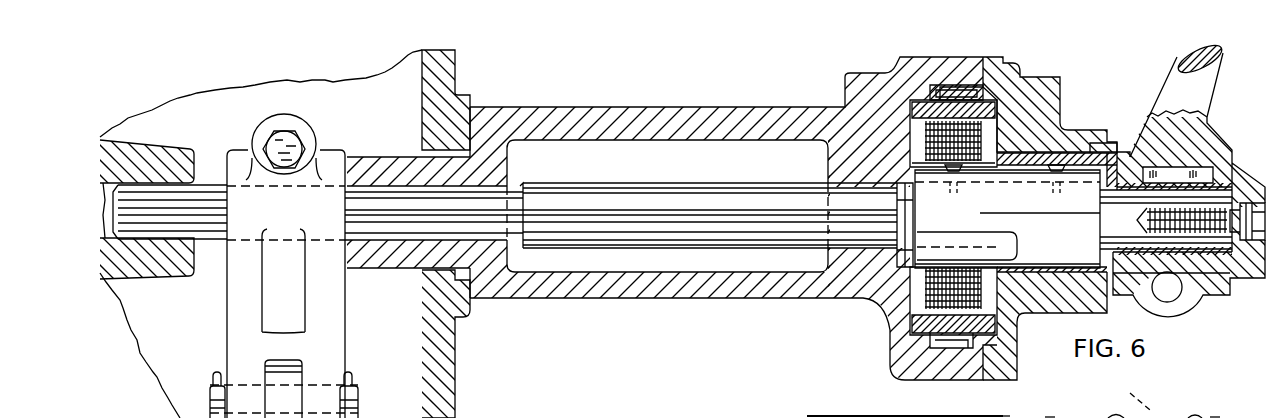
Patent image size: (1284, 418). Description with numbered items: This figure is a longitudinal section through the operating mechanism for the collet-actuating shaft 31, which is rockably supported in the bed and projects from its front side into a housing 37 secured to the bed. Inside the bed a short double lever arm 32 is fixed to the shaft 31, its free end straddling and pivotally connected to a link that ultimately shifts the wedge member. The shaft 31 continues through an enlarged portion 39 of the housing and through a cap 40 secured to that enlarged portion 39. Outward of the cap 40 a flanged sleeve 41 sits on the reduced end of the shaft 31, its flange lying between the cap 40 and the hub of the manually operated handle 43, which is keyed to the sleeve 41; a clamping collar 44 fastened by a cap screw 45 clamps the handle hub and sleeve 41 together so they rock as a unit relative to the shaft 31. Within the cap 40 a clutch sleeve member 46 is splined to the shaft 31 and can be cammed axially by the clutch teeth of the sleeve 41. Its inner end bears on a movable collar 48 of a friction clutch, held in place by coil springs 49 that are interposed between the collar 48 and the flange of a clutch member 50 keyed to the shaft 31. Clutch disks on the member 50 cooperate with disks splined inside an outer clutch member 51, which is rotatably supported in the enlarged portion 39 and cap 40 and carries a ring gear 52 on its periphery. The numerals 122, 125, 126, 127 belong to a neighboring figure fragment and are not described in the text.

The shaft 31 is at (637, 188).
The double lever arm 32 is at (330, 333).
The housing 37 is at (655, 117).
The enlarged portion of the housing 39 is at (915, 60).
The cap 40 is at (1033, 83).
The flanged sleeve 41 is at (1200, 263).
The manually operated handle 43 is at (1210, 77).
The clamping collar 44 is at (1262, 148).
The cap screw 45 is at (1257, 220).
The clutch sleeve member 46 is at (1060, 283).
The movable collar 48 is at (993, 140).
The coil spring 49 is at (977, 265).
The clutch member 50 is at (910, 313).
The outer clutch member 51 is at (910, 340).
The ring gear 52 is at (962, 95).
The element 122 (adjacent figure) 122 is at (1215, 417).
The element 125 (adjacent figure) 125 is at (1157, 417).
The element 126 (adjacent figure) 126 is at (1003, 417).
The element 127 (adjacent figure) 127 is at (1050, 417).